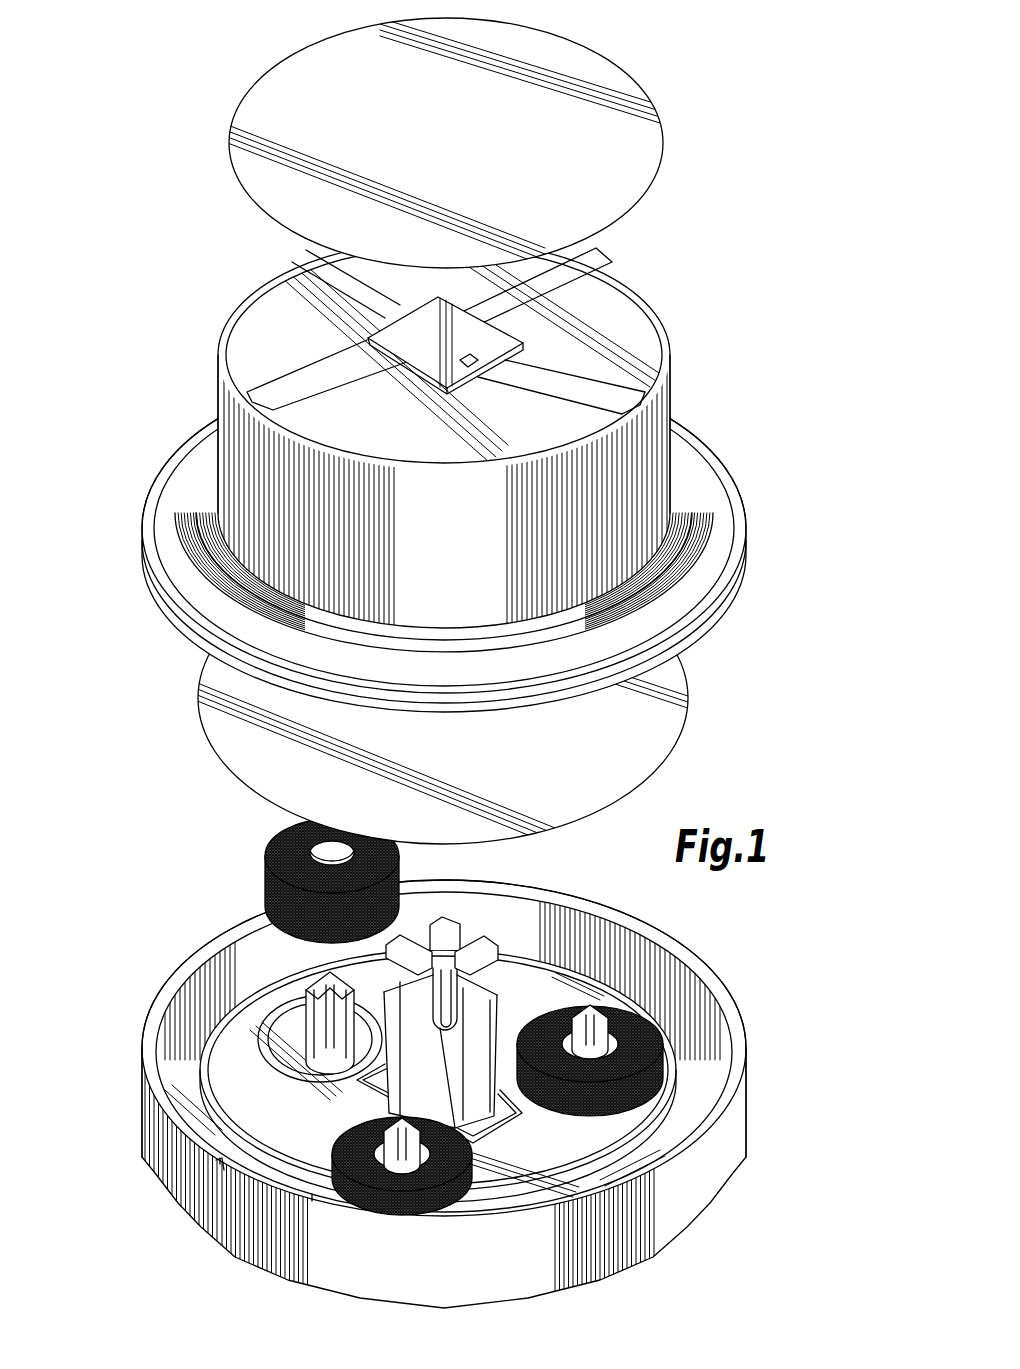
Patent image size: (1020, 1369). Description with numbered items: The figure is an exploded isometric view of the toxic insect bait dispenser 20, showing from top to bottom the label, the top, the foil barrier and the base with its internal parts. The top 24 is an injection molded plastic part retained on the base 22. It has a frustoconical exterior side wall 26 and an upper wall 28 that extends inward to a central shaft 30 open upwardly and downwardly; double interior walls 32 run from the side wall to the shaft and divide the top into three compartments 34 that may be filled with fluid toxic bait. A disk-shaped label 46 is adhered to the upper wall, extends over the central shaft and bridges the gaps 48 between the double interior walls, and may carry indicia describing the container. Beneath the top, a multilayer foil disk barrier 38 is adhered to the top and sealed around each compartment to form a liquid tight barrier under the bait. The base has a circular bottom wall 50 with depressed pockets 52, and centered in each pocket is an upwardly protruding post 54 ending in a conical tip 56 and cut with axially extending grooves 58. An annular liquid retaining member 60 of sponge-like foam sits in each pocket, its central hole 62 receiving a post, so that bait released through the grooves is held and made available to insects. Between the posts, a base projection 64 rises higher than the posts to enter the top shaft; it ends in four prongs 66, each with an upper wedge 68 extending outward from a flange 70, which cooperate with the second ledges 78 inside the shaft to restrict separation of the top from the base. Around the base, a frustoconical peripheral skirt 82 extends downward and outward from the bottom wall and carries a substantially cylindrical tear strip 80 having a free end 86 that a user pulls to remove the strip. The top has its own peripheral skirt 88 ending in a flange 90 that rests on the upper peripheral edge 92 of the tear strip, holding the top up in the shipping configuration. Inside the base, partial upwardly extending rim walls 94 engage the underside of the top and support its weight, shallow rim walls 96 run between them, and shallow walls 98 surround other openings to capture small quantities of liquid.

The toxic insect bait dispenser 20 is at (199, 258).
The base 22 is at (427, 1066).
The top 24 is at (442, 440).
The frustoconical exterior side wall 26 is at (215, 397).
The upper wall 28 is at (260, 338).
The central shaft 30 is at (444, 337).
The double interior walls 32 is at (346, 372).
The compartments 34 is at (573, 284).
The foil disk barrier 38 is at (431, 761).
The disk-shaped label 46 is at (430, 139).
The gaps 48 is at (585, 382).
The circular bottom wall 50 is at (297, 1143).
The depressed pockets 52 is at (284, 1076).
The post 54 is at (565, 1022).
The conical tip 56 is at (310, 975).
The axially extending grooves 58 is at (300, 1006).
The annular liquid retaining member 60 is at (447, 1014).
The central hole 62 is at (290, 833).
The base projection 64 is at (444, 989).
The prongs 66 is at (440, 930).
The upper wedge 68 is at (488, 938).
The flange 70 is at (433, 1020).
The second ledges 78 is at (466, 361).
The tear strip 80 is at (262, 1282).
The frustoconical peripheral skirt 82 is at (172, 1095).
The free end 86 is at (232, 1240).
The peripheral skirt 88 is at (168, 492).
The flange 90 is at (140, 524).
The upper peripheral edge 92 is at (140, 1052).
The partial upwardly extending rim walls 94 is at (214, 1032).
The shallow rim walls 96 is at (222, 1112).
The shallow walls 98 is at (365, 1096).